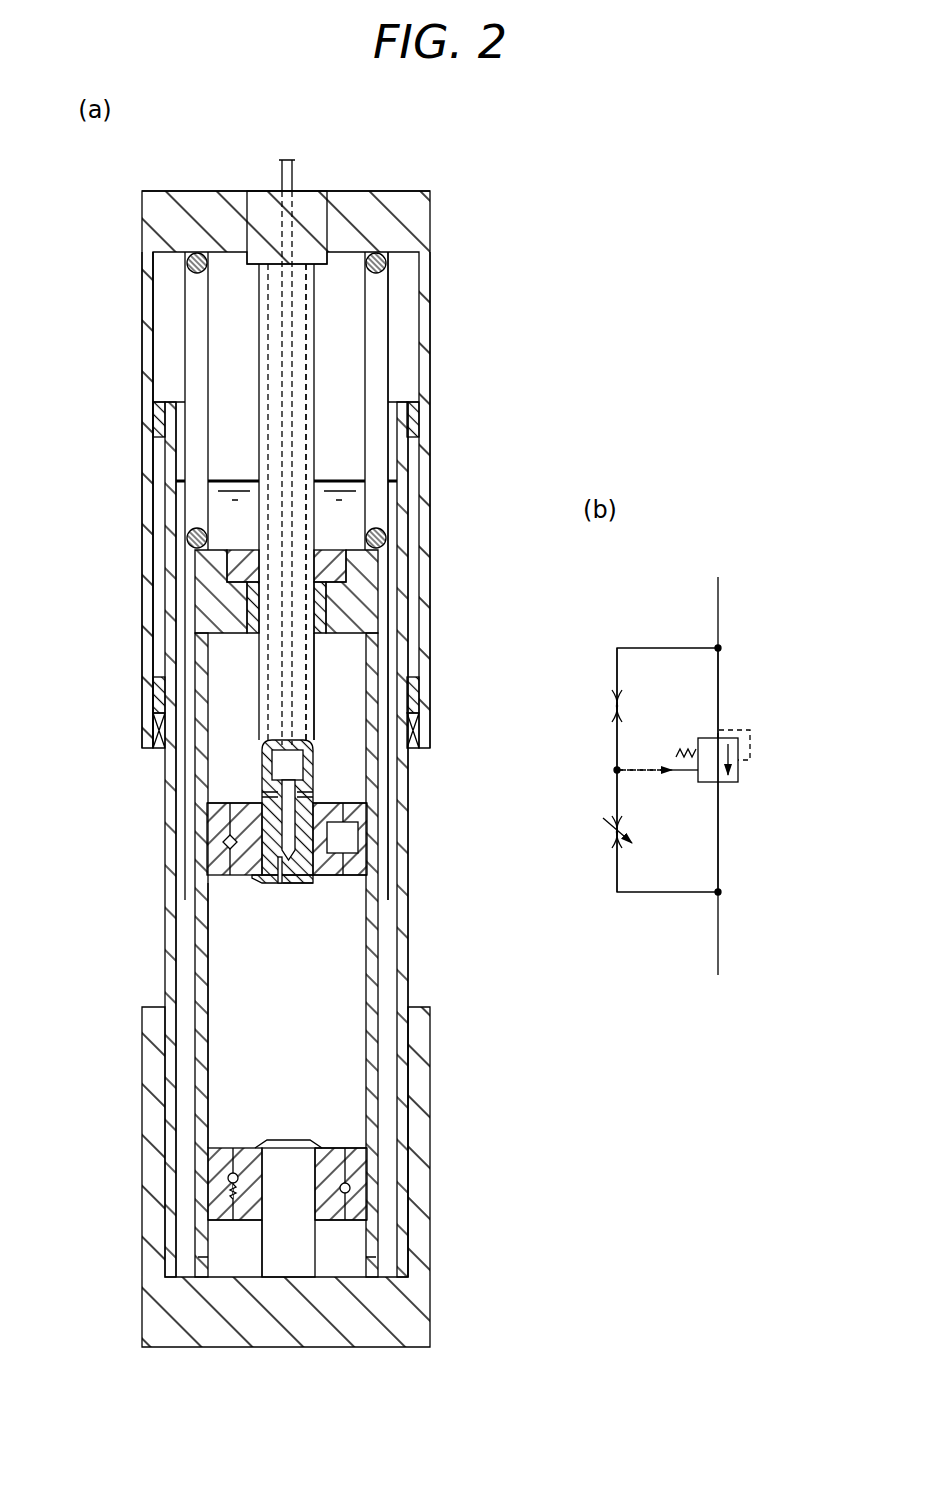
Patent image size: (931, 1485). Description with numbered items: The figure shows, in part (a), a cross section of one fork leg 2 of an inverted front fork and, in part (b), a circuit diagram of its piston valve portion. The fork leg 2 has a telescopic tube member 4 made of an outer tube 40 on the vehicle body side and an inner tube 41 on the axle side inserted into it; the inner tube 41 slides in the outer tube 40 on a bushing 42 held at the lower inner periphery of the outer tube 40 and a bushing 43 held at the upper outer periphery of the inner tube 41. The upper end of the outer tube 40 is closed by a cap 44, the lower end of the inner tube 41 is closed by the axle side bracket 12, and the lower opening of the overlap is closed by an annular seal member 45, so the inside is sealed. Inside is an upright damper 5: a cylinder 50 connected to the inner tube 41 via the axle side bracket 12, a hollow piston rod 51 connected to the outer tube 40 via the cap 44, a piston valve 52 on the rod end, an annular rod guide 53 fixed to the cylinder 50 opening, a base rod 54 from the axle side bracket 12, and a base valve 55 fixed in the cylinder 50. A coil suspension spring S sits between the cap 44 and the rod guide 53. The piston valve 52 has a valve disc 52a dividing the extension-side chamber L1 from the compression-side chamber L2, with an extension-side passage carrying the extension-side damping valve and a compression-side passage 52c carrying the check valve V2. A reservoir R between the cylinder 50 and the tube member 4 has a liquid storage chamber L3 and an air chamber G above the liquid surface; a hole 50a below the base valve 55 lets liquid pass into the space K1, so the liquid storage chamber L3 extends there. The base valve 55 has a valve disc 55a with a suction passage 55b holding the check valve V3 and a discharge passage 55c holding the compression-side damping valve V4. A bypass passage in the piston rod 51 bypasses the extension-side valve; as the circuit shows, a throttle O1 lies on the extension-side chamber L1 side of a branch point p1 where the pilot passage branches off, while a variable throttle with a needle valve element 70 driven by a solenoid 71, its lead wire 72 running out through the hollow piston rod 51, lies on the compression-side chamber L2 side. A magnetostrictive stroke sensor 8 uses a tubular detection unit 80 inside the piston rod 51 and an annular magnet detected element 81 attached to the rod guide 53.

The fork leg 2 is at (440, 216).
The telescopic tube member 4 is at (433, 472).
The outer tube 40 is at (152, 512).
The inner tube 41 is at (399, 975).
The bushing 42 is at (155, 690).
The bushing 43 is at (414, 412).
The cap 44 is at (365, 205).
The annular seal member 45 is at (160, 742).
The damper 5 is at (185, 958).
The cylinder 50 is at (380, 940).
The hole 50a is at (197, 1268).
The piston rod 51 is at (316, 364).
The piston valve 52 is at (220, 877).
The valve disc 52a is at (357, 802).
The compression-side passage 52c is at (216, 810).
The rod guide 53 is at (232, 632).
The base rod 54 is at (264, 1258).
The base valve 55 is at (224, 1145).
The valve disc 55a is at (352, 1222).
The suction passage 55b is at (352, 1170).
The discharge passage 55c is at (215, 1227).
The valve element 70 is at (322, 800).
The solenoid 71 is at (265, 752).
The lead wire 72 is at (282, 174).
The stroke sensor 8 is at (262, 363).
The detection unit 80 is at (262, 435).
The detected element 81 is at (332, 570).
The axle side bracket 12 is at (410, 1062).
The compression-side valve V2 is at (223, 842).
The suction valve V3 is at (350, 1188).
The discharge valve V4 is at (227, 1195).
The extension-side chamber L1 is at (345, 675).
The compression-side chamber L2 is at (276, 1054).
The liquid storage chamber L3 is at (186, 1018).
The space K1 is at (345, 1250).
The reservoir R is at (172, 311).
The air chamber G is at (400, 300).
The suspension spring S is at (186, 264).
The throttle O1 is at (608, 706).
The branch point p1 is at (615, 770).